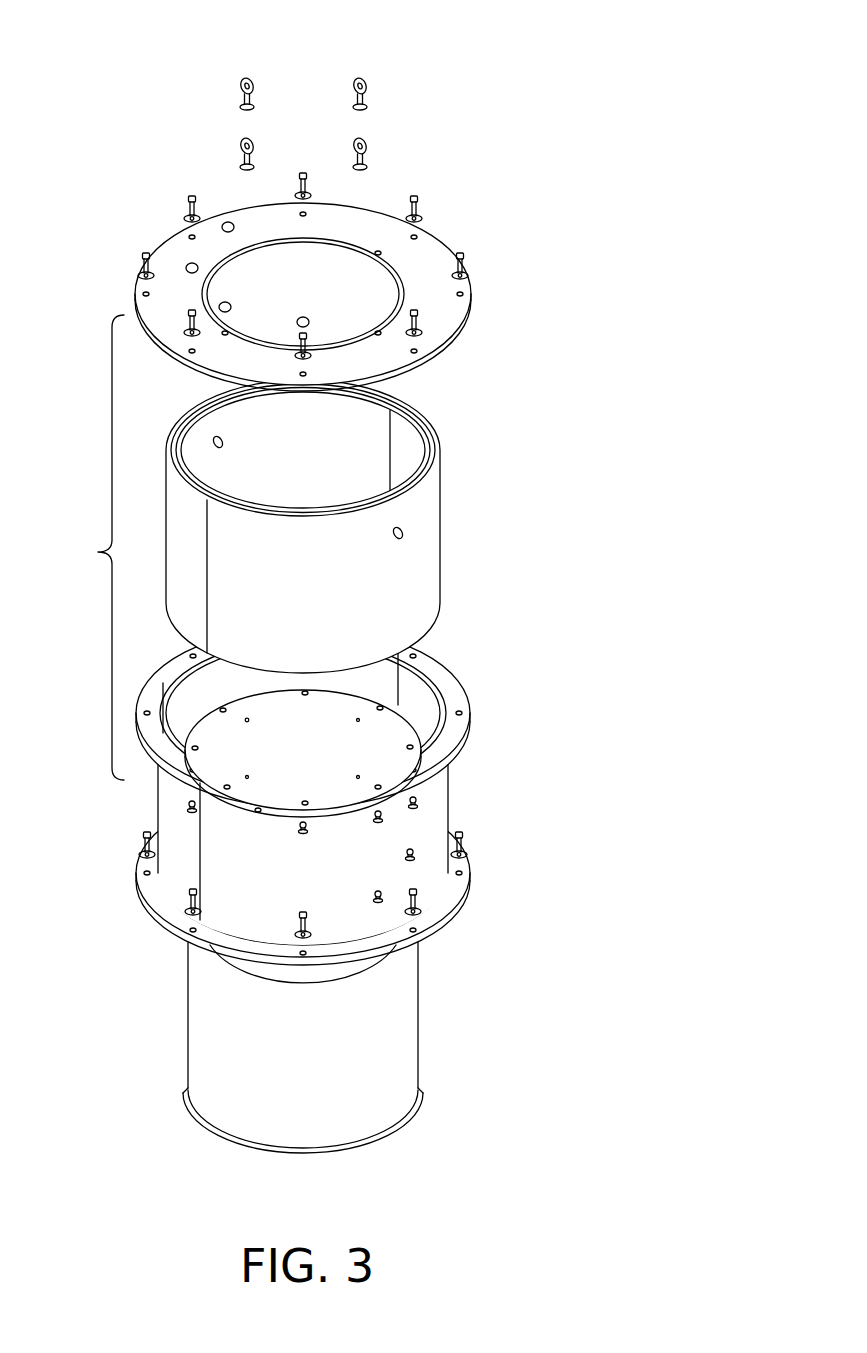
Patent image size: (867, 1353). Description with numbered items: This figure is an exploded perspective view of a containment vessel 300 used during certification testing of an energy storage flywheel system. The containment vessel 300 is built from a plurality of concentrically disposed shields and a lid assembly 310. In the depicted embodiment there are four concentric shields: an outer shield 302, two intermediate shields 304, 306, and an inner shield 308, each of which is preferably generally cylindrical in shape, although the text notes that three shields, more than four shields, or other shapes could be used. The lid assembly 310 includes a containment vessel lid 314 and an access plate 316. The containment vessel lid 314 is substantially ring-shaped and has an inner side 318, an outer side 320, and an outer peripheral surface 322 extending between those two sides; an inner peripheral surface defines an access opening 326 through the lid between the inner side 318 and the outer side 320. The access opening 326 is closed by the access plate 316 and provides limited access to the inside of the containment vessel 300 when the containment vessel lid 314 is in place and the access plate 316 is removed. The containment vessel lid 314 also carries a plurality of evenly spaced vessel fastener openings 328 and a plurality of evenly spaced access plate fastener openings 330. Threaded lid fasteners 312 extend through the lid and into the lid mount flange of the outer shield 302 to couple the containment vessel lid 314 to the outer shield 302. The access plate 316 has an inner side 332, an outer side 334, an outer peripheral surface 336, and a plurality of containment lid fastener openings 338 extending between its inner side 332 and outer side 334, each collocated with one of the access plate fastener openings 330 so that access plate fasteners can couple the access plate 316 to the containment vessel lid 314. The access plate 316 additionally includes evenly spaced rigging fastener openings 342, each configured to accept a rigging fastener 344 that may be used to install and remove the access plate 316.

The containment vessel 300 is at (637, 185).
The outer shield 302 is at (447, 793).
The intermediate shield 304 is at (433, 527).
The intermediate shield 306 is at (413, 470).
The inner shield 308 is at (413, 1032).
The lid assembly 310 is at (485, 897).
The threaded lid fasteners 312 is at (418, 190).
The containment vessel lid 314 is at (437, 240).
The access plate 316 is at (284, 760).
The inner side 318 is at (437, 357).
The outer side 320 is at (338, 253).
The outer peripheral surface 322 is at (303, 247).
The access opening 326 is at (296, 312).
The vessel fastener openings 328 is at (470, 288).
The access plate fastener openings 330 is at (225, 255).
The inner side 332 is at (340, 817).
The outer side 334 is at (402, 727).
The outer peripheral surface 336 is at (258, 812).
The containment lid fastener openings 338 is at (303, 802).
The rigging fastener openings 342 is at (249, 720).
The rigging fastener 344 is at (250, 80).